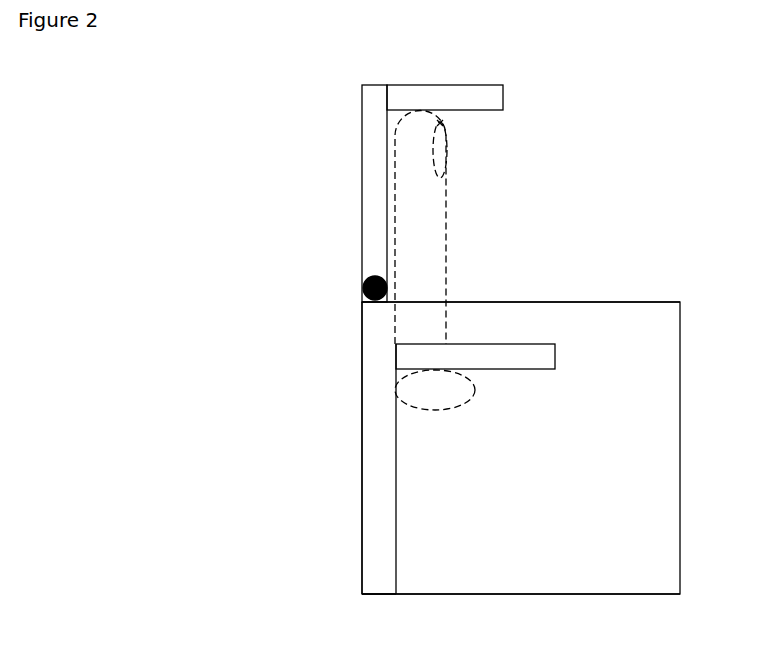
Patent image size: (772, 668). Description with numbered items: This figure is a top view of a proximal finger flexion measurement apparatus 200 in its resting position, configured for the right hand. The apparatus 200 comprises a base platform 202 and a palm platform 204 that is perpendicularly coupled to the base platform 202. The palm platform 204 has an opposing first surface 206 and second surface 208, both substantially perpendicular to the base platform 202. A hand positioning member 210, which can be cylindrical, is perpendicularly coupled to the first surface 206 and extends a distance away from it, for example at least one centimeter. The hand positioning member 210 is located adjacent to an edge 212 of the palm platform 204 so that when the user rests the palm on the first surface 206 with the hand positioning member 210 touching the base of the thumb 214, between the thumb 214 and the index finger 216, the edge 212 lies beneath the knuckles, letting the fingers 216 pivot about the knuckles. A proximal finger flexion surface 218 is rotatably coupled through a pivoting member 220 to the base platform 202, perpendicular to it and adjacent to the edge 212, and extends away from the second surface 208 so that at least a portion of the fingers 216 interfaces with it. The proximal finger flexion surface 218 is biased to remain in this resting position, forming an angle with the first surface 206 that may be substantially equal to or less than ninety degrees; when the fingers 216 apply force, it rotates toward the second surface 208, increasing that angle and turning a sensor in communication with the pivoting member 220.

The proximal finger flexion measurement apparatus 200 is at (679, 428).
The base platform 202 is at (570, 594).
The palm platform 204 is at (376, 594).
The first surface 206 is at (396, 510).
The second surface 208 is at (362, 460).
The hand positioning member 210 is at (555, 358).
The edge 212 is at (407, 300).
The thumb 214 is at (478, 398).
The index finger 216 is at (453, 219).
The proximal finger flexion surface 218 is at (362, 143).
The pivoting member 220 is at (360, 290).